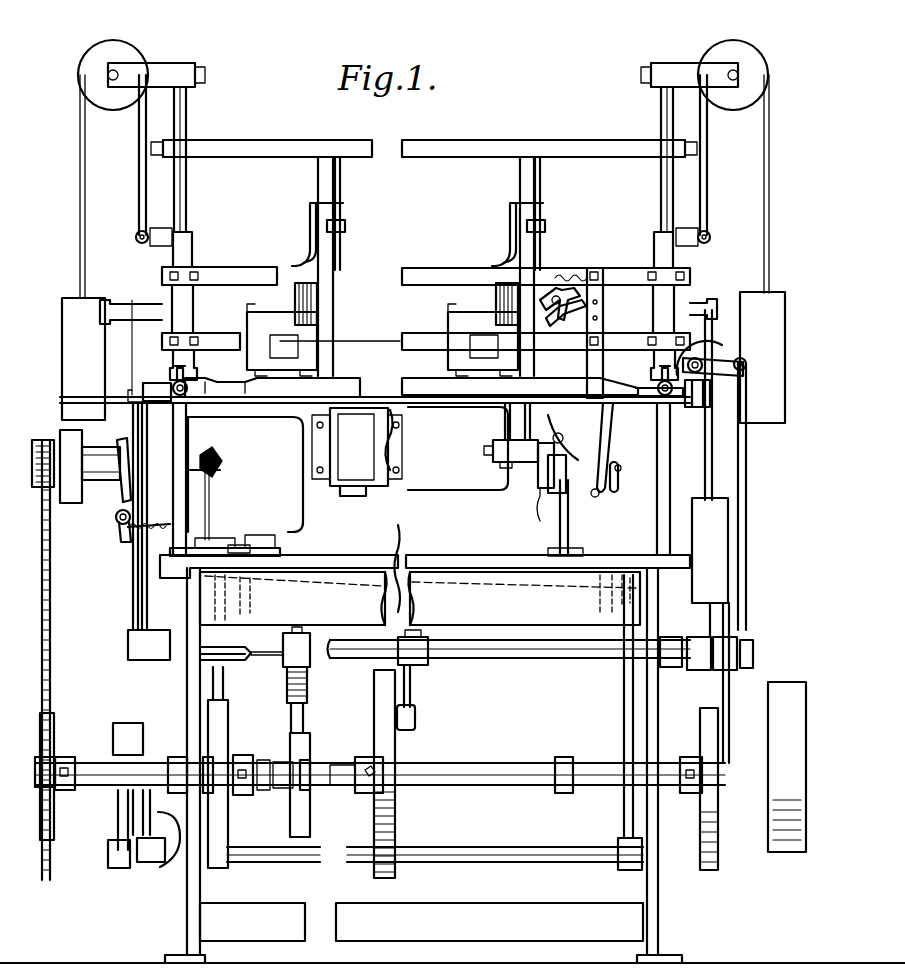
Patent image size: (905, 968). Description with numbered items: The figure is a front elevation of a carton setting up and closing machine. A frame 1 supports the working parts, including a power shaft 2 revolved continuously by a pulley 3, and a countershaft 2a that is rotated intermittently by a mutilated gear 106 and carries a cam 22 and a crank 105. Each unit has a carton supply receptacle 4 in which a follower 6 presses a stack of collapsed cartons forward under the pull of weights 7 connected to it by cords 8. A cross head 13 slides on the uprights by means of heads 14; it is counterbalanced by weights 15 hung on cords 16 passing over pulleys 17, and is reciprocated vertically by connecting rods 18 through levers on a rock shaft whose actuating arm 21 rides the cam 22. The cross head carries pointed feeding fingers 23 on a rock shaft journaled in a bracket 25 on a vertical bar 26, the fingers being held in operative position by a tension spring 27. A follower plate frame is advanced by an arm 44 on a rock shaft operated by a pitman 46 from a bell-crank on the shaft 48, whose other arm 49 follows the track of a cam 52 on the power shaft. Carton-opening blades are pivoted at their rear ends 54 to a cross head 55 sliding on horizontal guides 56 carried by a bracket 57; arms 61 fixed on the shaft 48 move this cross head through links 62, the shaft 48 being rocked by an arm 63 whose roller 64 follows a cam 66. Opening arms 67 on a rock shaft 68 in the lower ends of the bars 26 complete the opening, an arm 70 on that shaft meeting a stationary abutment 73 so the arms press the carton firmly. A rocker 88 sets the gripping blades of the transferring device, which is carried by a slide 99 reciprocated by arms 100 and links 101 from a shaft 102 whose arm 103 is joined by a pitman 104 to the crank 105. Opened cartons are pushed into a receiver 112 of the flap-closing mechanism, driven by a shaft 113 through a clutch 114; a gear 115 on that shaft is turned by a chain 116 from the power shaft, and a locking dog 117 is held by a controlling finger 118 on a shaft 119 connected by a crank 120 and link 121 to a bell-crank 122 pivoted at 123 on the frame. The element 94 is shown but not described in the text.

The frame 1 is at (186, 700).
The power shaft 2 is at (455, 763).
The countershaft 2a is at (318, 768).
The pulley 3 is at (787, 767).
The carton supply receptacle 4 is at (382, 340).
The follower 6 is at (295, 302).
The weights 7 is at (722, 572).
The cords or cables 8 is at (750, 470).
The cross head or frame 13 is at (432, 278).
The heads 14 is at (172, 258).
The weights 15 is at (423, 357).
The cords 16 is at (80, 200).
The idler wheels or pulleys 17 is at (92, 57).
The connecting rods 18 is at (132, 340).
The actuating arm 21 is at (302, 707).
The cam 22 is at (310, 818).
The fingers 23 is at (552, 288).
The bracket 25 is at (566, 300).
The vertical bar 26 is at (603, 312).
The tension spring 27 is at (572, 290).
The arm 44 is at (610, 424).
The rod or pitman 46 is at (728, 512).
The shaft or axis 48 is at (508, 660).
The arm 49 is at (566, 530).
The cam 52 is at (718, 815).
The rear end 54 is at (493, 452).
The cross head 55 is at (375, 389).
The horizontal guides 56 is at (175, 380).
The bracket 57 is at (182, 460).
The arms 61 is at (133, 462).
The links 62 is at (158, 402).
The arm 63 is at (411, 687).
The roller or projection 64 is at (408, 728).
The cam 66 is at (396, 818).
The arms 67 is at (569, 437).
The rock shaft 68 is at (596, 497).
The arm 70 is at (619, 465).
The abutment 73 is at (618, 480).
The rocker 88 is at (540, 490).
The guide block 94 is at (530, 424).
The slide 99 is at (400, 548).
The arms 100 is at (223, 682).
The links 101 is at (606, 602).
The shaft 102 is at (528, 847).
The arm 103 is at (122, 810).
The link or pitman 104 is at (138, 820).
The crank 105 is at (170, 860).
The mutilated gear 106 is at (228, 828).
The receiver 112 is at (357, 452).
The shaft 113 is at (218, 466).
The controlling clutch 114 is at (95, 460).
The driving gear 115 is at (60, 430).
The chain 116 is at (50, 645).
The locking dog 117 is at (118, 478).
The controlling finger 118 is at (118, 522).
The shaft 119 is at (125, 540).
The crank 120 is at (130, 535).
The link 121 is at (130, 542).
The bell-crank 122 is at (225, 535).
The pivot 123 is at (240, 540).